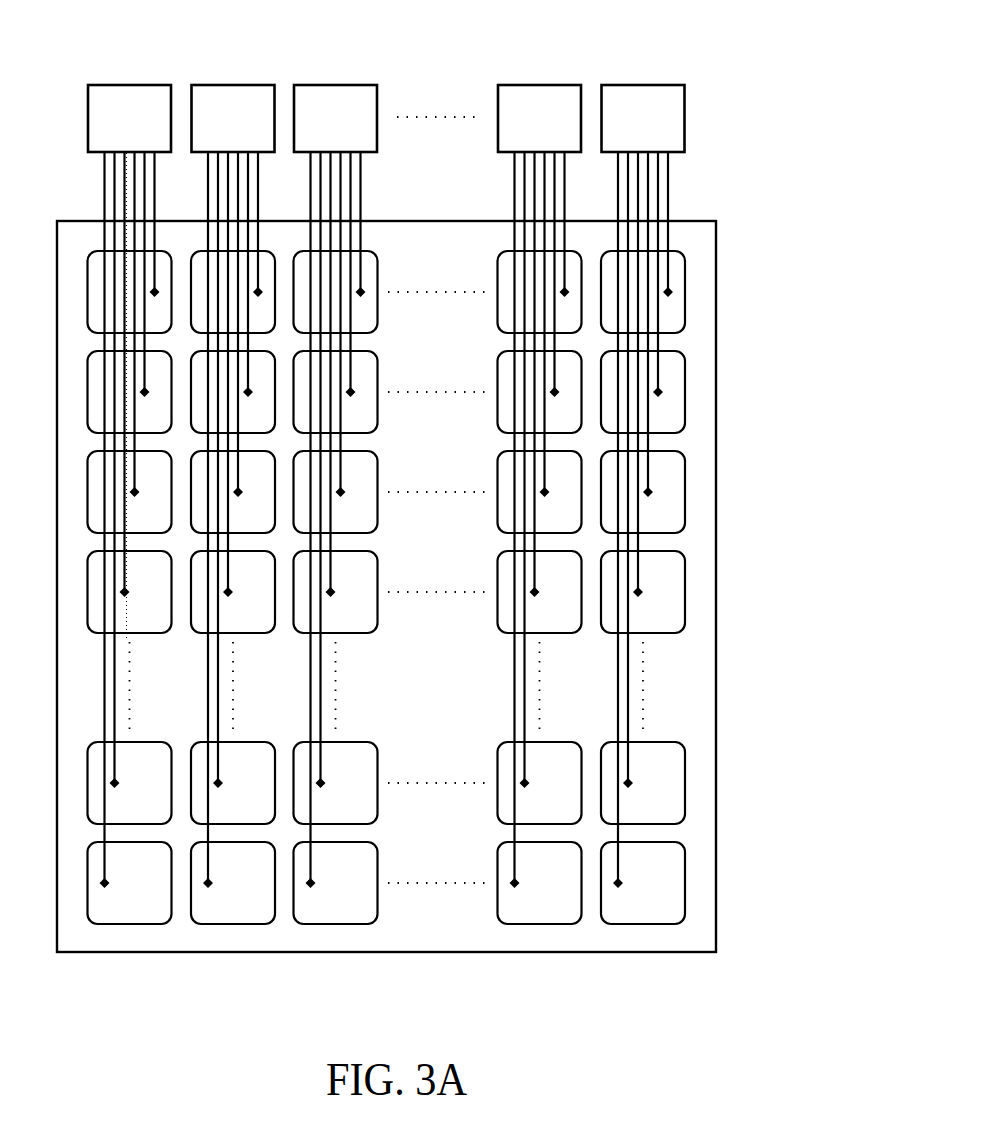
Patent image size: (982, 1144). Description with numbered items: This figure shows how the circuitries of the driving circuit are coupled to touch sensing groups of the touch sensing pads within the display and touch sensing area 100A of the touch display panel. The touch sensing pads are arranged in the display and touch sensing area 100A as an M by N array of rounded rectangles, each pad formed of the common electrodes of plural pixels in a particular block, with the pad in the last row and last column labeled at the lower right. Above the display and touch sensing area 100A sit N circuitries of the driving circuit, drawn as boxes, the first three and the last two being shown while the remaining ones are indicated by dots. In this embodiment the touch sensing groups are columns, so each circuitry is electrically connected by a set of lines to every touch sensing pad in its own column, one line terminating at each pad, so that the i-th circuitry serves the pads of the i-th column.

The display and touch sensing area 100A is at (716, 617).